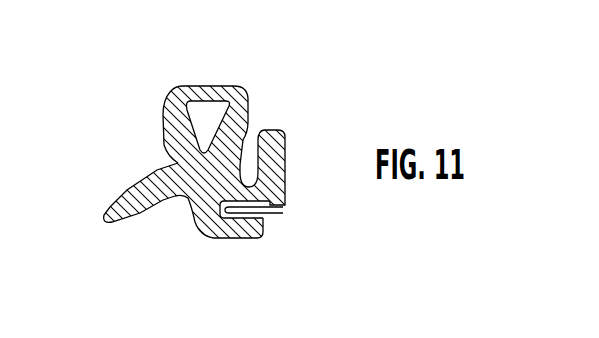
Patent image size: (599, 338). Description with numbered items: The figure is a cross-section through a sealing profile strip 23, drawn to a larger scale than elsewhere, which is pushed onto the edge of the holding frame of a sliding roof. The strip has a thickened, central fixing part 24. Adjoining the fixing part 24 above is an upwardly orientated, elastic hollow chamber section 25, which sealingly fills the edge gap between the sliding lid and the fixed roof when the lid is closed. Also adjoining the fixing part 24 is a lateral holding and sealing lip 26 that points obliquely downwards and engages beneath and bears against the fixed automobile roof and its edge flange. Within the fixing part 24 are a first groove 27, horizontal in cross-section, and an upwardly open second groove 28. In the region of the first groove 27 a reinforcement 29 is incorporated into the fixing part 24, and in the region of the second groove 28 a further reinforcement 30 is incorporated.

The sealing profile strip 23 is at (220, 76).
The fixing part 24 is at (188, 204).
The hollow chamber section 25 is at (237, 103).
The holding and sealing lip 26 is at (128, 193).
The first groove 27 is at (258, 212).
The second groove 28 is at (248, 145).
The reinforcement 29 is at (229, 217).
The reinforcement 30 is at (276, 169).